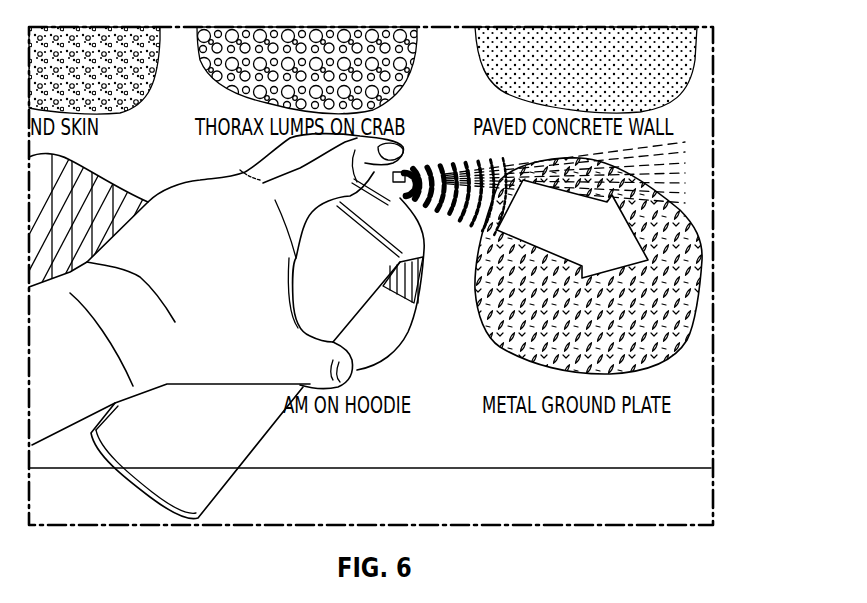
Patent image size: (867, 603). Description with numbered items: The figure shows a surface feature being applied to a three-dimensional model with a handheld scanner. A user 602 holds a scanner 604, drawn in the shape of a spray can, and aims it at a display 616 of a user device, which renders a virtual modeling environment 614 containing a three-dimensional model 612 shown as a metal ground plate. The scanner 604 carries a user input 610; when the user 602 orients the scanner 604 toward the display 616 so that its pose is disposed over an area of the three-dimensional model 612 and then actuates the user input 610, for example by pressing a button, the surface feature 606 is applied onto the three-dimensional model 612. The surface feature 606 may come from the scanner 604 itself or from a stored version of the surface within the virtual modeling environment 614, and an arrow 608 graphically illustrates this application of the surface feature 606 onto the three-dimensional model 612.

The user 602 is at (201, 287).
The scanner 604 is at (263, 427).
The surface feature 606 is at (492, 336).
The arrow 608 is at (571, 235).
The user input 610 is at (356, 271).
The three-dimensional model 612 is at (652, 328).
The virtual modeling environment 614 is at (698, 86).
The display 616 is at (716, 262).